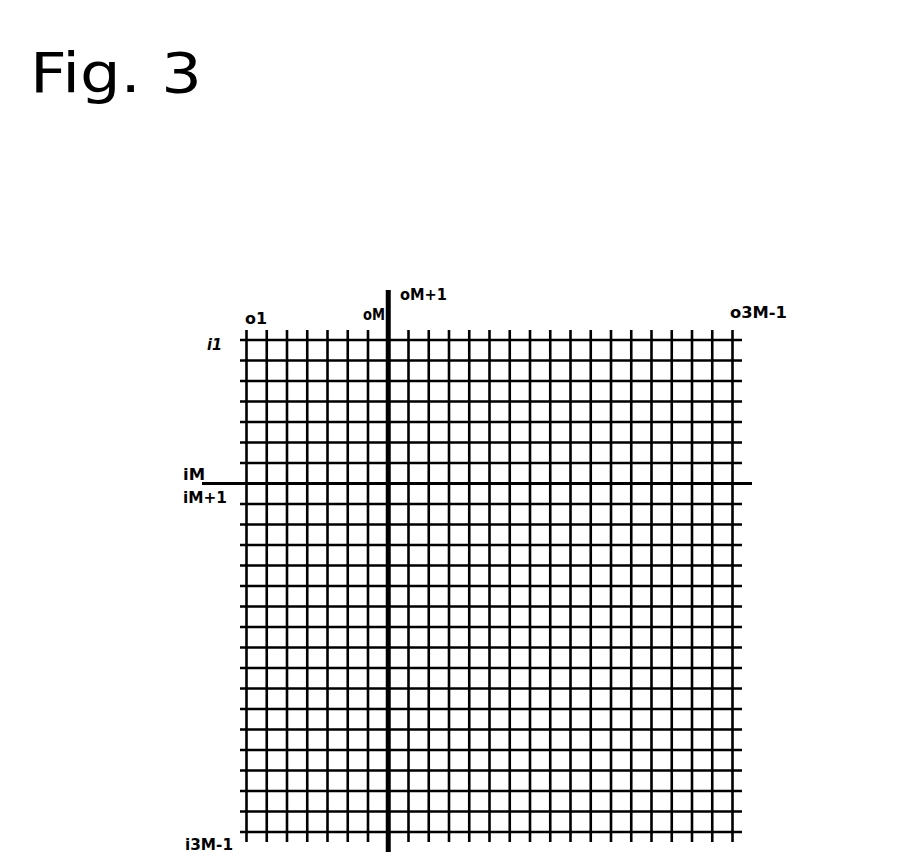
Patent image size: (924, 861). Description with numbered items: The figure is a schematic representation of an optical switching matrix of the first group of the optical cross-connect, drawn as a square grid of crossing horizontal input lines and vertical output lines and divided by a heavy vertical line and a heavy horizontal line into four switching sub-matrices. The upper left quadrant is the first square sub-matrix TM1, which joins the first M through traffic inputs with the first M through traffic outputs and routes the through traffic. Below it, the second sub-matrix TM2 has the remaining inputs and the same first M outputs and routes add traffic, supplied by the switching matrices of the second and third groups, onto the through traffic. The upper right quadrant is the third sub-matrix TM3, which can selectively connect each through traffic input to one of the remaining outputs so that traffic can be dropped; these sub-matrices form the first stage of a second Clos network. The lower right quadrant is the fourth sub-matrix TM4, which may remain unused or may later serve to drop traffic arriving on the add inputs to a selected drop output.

The first square sub-matrix TM1 is at (252, 387).
The second sub-matrix TM2 is at (253, 690).
The third sub-matrix TM3 is at (604, 335).
The fourth sub-matrix TM4 is at (690, 632).